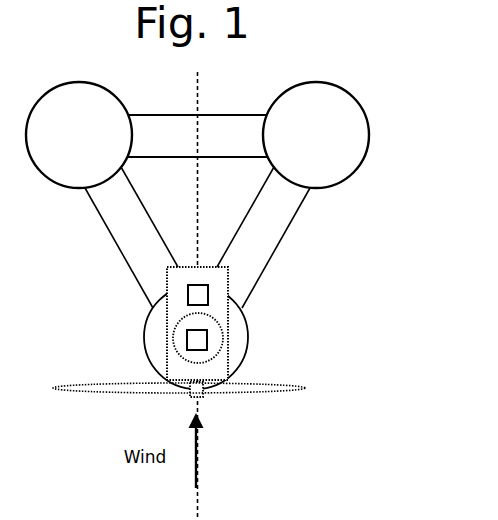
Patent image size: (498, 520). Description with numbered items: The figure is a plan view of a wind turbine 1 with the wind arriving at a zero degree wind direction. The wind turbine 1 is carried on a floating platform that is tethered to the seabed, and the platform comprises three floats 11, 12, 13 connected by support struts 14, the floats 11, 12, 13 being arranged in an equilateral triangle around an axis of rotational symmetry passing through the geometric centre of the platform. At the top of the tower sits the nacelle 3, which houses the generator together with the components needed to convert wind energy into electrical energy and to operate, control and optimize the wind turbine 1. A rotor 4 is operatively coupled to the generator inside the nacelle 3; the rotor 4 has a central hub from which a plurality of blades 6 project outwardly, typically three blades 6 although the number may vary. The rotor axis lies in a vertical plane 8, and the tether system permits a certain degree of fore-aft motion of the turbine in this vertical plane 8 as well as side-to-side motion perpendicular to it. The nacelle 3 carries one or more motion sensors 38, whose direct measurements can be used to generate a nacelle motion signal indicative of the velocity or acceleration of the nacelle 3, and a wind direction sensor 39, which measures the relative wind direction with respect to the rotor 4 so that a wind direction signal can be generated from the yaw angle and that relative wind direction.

The wind turbine 1 is at (343, 262).
The nacelle 3 is at (167, 323).
The rotor 4 is at (268, 402).
The blades 6 is at (95, 385).
The vertical plane 8 is at (200, 85).
The float 11 is at (237, 355).
The float 12 is at (58, 188).
The float 13 is at (336, 142).
The support struts 14 is at (178, 130).
The motion sensor 38 is at (207, 340).
The wind direction sensor 39 is at (208, 295).